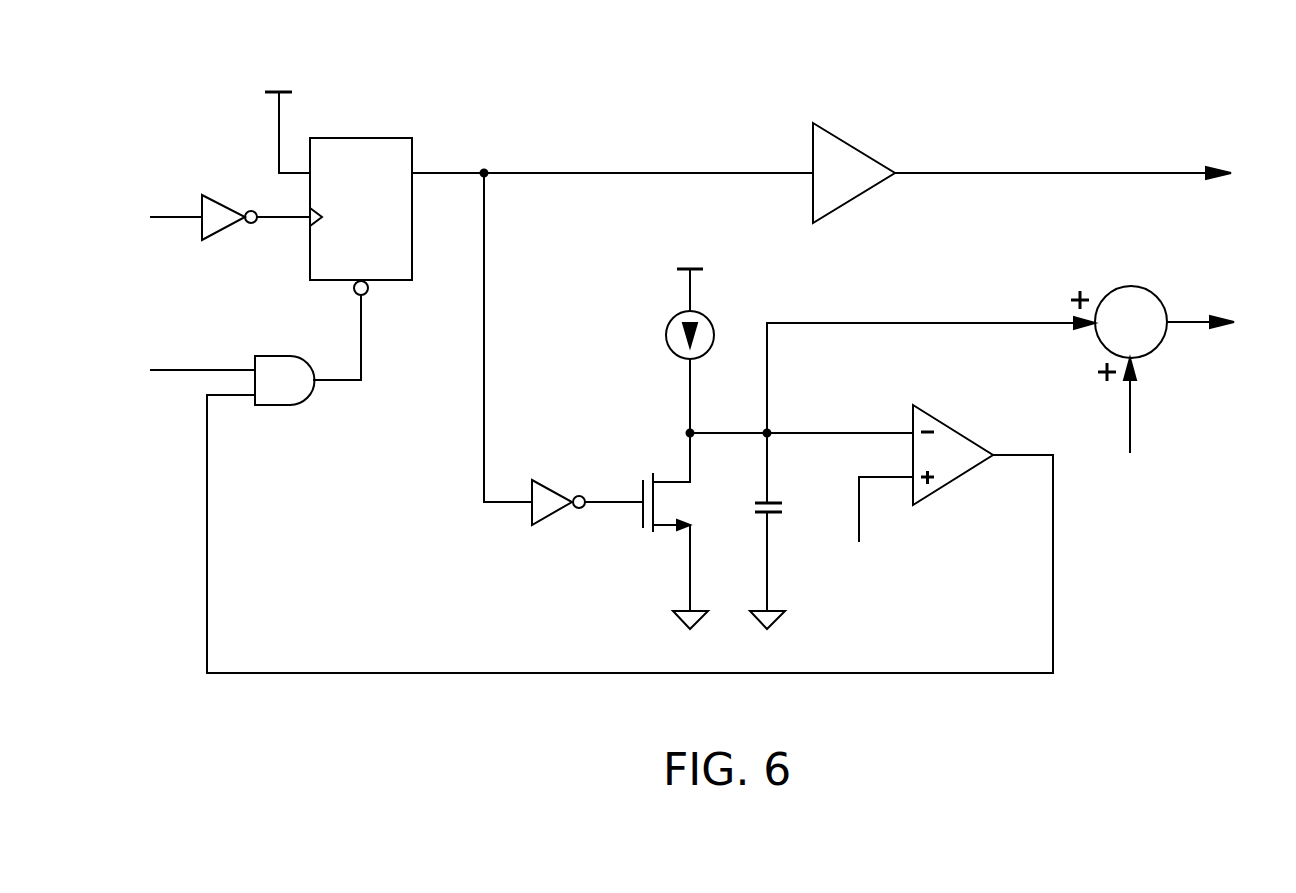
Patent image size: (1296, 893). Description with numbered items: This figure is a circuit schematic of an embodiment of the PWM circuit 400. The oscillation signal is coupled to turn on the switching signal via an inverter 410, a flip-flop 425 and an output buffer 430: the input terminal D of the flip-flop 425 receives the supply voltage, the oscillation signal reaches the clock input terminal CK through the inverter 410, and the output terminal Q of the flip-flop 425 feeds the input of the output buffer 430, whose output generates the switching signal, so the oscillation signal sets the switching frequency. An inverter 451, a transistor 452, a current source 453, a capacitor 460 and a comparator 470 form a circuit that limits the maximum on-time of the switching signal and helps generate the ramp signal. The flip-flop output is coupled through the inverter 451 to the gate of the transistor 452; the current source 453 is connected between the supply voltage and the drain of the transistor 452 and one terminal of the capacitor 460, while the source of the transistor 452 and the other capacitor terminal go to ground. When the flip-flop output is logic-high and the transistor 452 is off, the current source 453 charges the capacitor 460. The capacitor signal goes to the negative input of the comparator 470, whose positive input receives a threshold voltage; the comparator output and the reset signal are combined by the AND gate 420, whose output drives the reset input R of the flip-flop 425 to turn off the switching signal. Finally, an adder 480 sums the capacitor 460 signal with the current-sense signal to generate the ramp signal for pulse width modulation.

The PWM circuit 400 is at (1236, 68).
The inverter 410 is at (256, 205).
The AND gate 420 is at (284, 365).
The flip-flop 425 is at (361, 201).
The output buffer 430 is at (1022, 168).
The inverter 451 is at (587, 491).
The transistor 452 is at (689, 531).
The current source 453 is at (666, 334).
The capacitor 460 is at (791, 531).
The comparator 470 is at (929, 471).
The adder 480 is at (1152, 355).